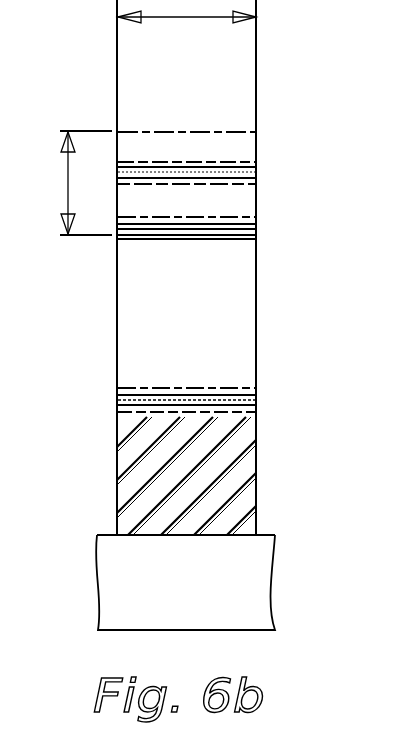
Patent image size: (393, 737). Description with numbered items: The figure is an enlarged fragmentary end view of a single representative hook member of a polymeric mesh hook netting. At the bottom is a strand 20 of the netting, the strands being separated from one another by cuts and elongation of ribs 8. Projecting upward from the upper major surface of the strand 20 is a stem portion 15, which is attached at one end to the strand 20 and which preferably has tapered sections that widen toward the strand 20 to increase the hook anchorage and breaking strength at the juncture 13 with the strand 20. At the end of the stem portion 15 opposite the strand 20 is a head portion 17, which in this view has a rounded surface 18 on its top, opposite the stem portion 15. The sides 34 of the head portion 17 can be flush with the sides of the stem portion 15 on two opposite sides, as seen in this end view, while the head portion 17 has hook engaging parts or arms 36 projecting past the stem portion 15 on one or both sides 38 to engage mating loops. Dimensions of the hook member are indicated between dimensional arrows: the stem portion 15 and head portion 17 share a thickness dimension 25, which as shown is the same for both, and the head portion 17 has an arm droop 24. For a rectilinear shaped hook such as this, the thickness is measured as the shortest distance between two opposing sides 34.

The ribs 8 is at (105, 565).
The top surface of base 13 is at (245, 535).
The stem portion 15 is at (242, 292).
The head portion 17 is at (250, 148).
The rounded surface 18 is at (155, 130).
The strand 20 is at (132, 432).
The arm droop 24 is at (68, 178).
The thickness dimension 25 is at (188, 17).
The sides of the head portion 34 is at (258, 197).
The hook engaging part or arm 36 is at (258, 215).
The sides 38 is at (242, 332).